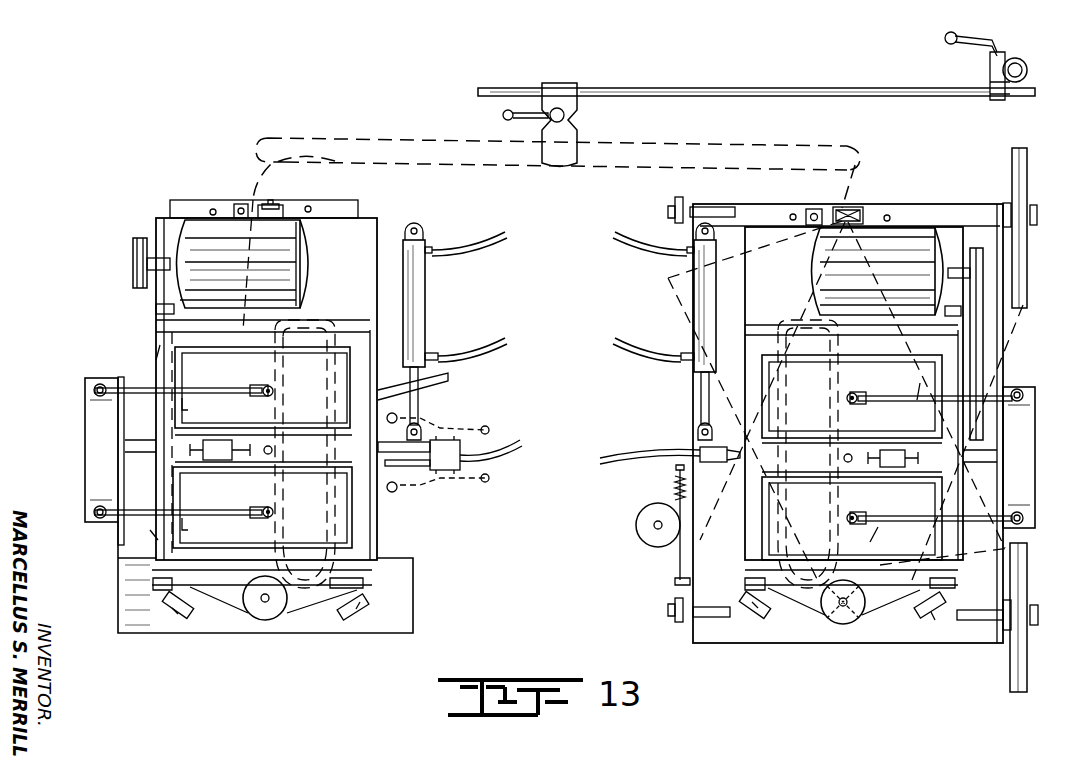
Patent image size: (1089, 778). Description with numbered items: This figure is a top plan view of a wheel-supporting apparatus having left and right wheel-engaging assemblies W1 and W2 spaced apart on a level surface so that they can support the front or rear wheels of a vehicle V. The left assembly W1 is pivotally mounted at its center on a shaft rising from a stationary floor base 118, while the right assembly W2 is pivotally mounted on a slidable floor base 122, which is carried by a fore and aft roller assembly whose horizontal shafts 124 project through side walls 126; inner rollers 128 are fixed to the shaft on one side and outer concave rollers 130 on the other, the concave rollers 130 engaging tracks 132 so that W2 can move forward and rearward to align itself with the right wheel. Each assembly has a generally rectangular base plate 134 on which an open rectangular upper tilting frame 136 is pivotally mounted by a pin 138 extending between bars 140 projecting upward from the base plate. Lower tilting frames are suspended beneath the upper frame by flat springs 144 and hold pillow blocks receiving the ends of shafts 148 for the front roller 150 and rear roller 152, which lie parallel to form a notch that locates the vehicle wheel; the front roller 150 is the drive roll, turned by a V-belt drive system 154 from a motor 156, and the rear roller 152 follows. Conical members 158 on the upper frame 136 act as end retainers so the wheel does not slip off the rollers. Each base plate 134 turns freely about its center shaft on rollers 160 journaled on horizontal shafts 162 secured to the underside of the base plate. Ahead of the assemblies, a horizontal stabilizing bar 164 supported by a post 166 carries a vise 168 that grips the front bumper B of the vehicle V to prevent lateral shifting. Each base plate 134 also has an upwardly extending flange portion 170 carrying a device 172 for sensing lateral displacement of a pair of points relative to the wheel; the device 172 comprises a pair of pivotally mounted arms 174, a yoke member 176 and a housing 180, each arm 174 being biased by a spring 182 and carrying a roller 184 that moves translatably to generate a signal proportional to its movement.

The stationary floor base 118 is at (190, 200).
The slidable floor base 122 is at (845, 643).
The horizontal shafts 124 is at (668, 210).
The side walls 126 is at (1003, 252).
The inner rollers 128 is at (678, 198).
The outer concave rollers 130 is at (1032, 205).
The tracks 132 is at (1028, 165).
The base plate 134 is at (368, 226).
The upper tilting frame 136 is at (375, 558).
The pin 138 is at (156, 310).
The bars 140 is at (180, 320).
The flat springs 144 is at (150, 348).
The shafts 148 is at (128, 385).
The front roller 150 is at (216, 383).
The rear roller 152 is at (221, 499).
The V-belt drive system 154 is at (140, 238).
The motor 156 is at (228, 251).
The conical members 158 is at (156, 437).
The rollers 160 is at (283, 212).
The horizontal shafts 162 is at (266, 204).
The horizontal stabilizing bar 164 is at (820, 90).
The post 166 is at (1020, 57).
The vise 168 is at (577, 125).
The flange portion 170 is at (122, 453).
The device 172 is at (84, 381).
The arms 174 is at (555, 461).
The yoke member 176 is at (118, 473).
The housing 180 is at (88, 408).
The spring 182 is at (94, 390).
The roller 184 is at (268, 389).
The front bumper B is at (405, 135).
The vehicle V is at (302, 137).
The left wheel-engaging assembly W1 is at (128, 278).
The right wheel-engaging assembly W2 is at (1015, 332).